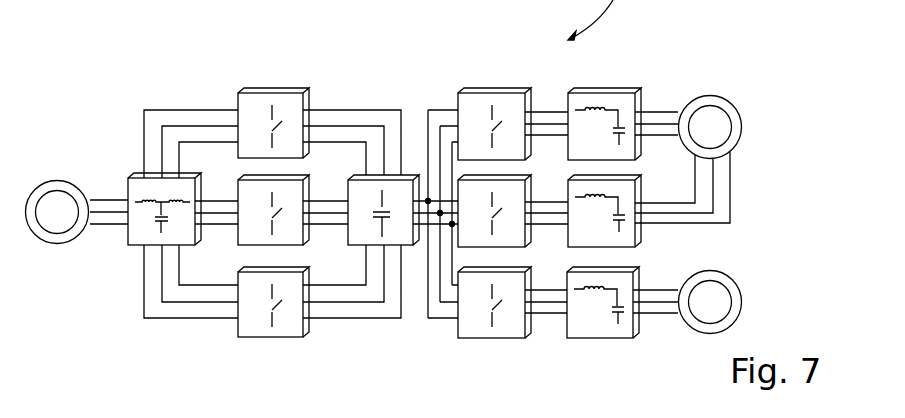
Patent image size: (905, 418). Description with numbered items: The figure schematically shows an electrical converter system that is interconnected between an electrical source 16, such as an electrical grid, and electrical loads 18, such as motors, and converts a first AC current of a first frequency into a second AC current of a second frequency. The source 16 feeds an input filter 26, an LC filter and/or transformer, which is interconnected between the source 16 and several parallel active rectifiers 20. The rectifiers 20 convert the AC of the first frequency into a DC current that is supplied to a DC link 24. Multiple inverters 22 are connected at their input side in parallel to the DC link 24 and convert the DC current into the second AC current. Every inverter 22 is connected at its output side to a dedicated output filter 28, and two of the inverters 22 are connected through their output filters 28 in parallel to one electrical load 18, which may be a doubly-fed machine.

The electrical source 16 is at (60, 245).
The electrical load 18 is at (708, 95).
The active rectifier 20 is at (233, 0).
The inverter 22 is at (505, 87).
The DC link 24 is at (408, 174).
The input filter 26 is at (135, 245).
The output filter 28 is at (612, 87).